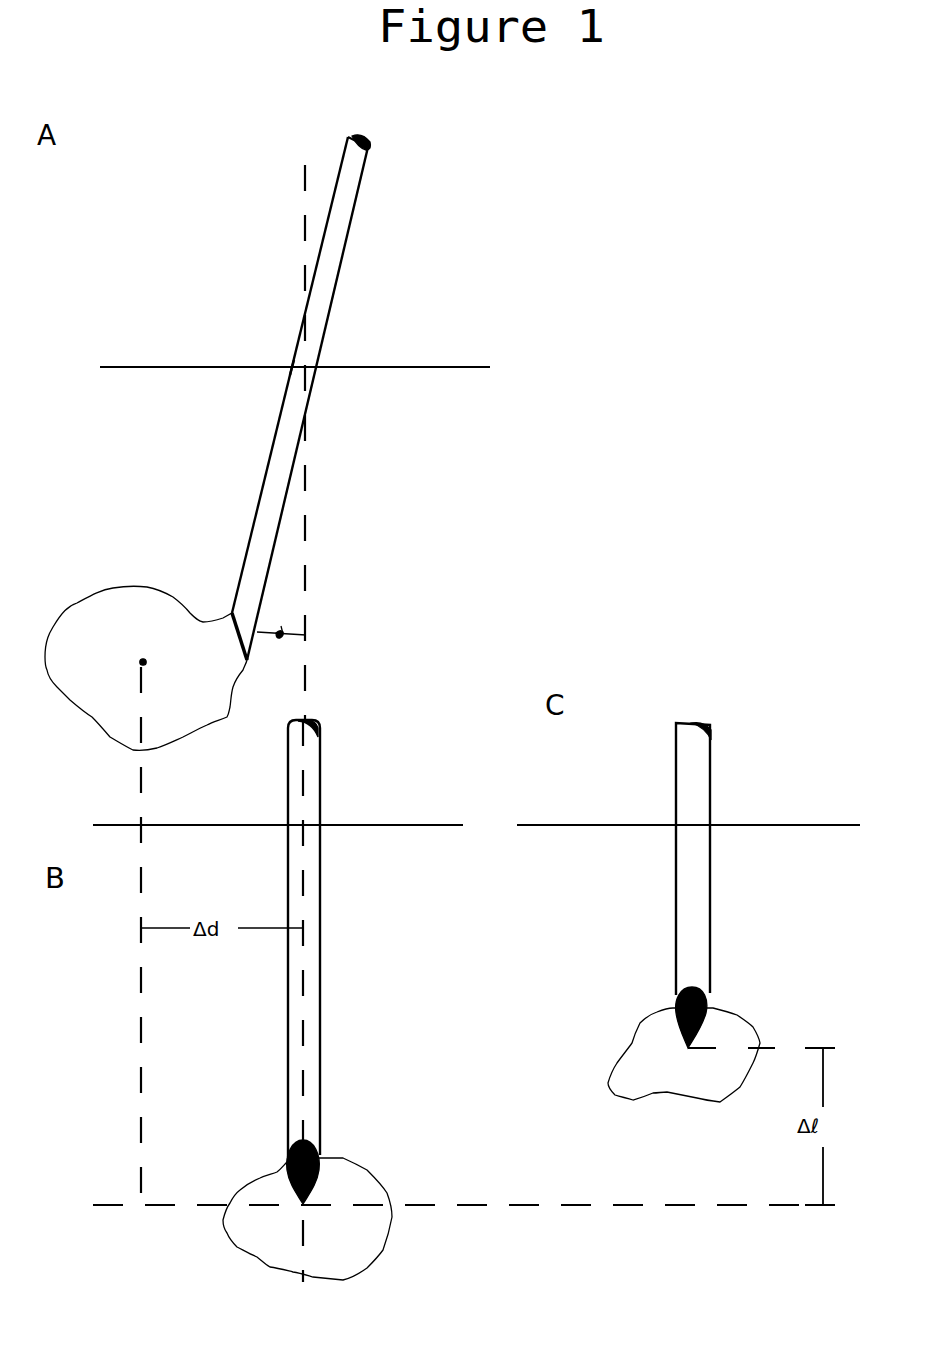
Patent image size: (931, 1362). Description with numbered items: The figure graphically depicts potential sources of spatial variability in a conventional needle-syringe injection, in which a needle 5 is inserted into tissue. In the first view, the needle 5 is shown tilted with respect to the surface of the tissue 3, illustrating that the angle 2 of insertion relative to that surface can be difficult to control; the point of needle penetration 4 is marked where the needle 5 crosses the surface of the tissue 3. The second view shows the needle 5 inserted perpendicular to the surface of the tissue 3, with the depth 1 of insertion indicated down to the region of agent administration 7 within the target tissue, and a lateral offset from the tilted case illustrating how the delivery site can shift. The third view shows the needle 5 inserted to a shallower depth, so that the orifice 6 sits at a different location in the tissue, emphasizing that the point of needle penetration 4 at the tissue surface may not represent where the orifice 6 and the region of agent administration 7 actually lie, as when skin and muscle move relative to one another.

In FIG. 1B, the depth 1 is at (443, 1200).
In FIG. 1A, the angle 2 is at (277, 647).
In FIG. 1A, the surface of the tissue 3 is at (417, 354).
In FIG. 1A, the point of needle penetration 4 is at (286, 360).
In FIG. 1B, the needle 5 is at (323, 953).
In FIG. 1C, the orifice 6 is at (675, 1005).
In FIG. 1B, the region of agent administration 7 is at (288, 1200).